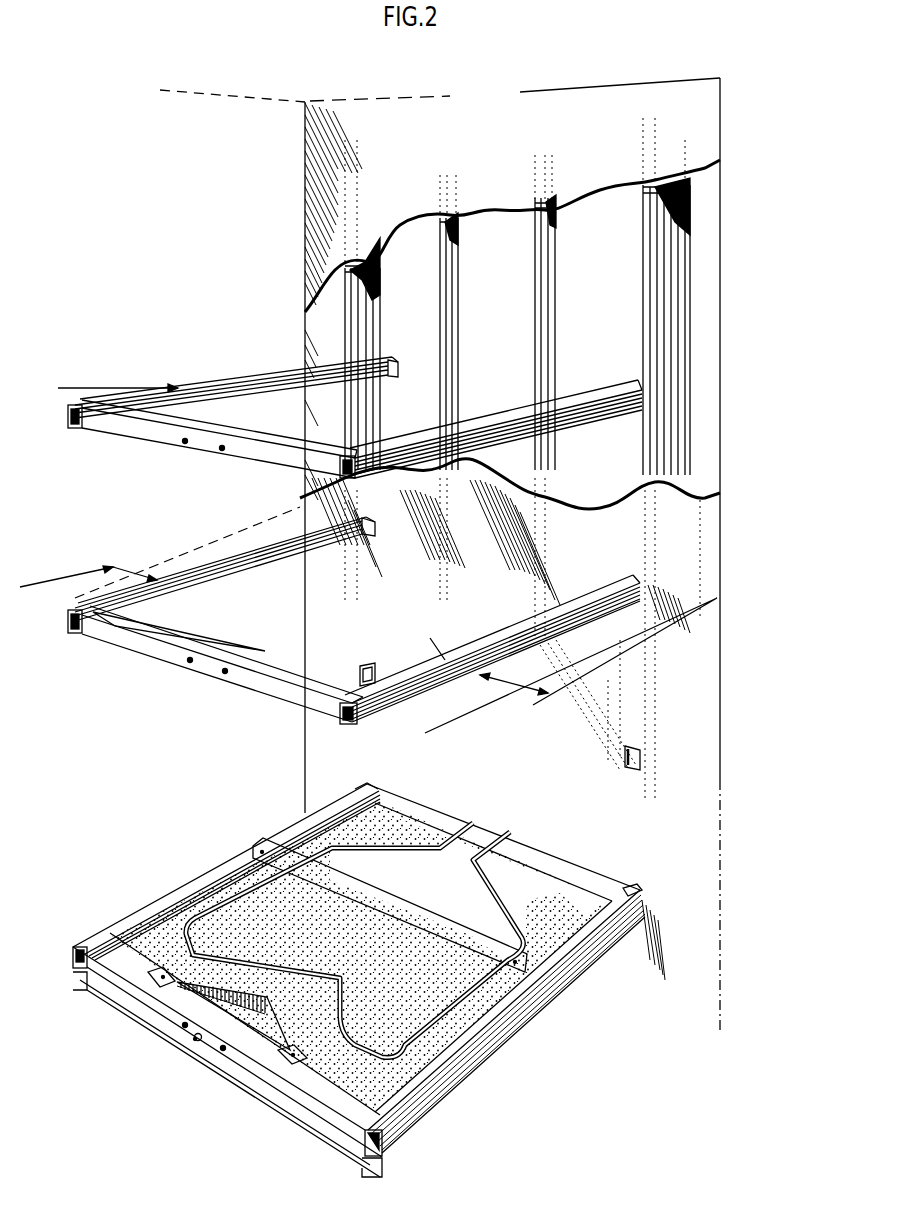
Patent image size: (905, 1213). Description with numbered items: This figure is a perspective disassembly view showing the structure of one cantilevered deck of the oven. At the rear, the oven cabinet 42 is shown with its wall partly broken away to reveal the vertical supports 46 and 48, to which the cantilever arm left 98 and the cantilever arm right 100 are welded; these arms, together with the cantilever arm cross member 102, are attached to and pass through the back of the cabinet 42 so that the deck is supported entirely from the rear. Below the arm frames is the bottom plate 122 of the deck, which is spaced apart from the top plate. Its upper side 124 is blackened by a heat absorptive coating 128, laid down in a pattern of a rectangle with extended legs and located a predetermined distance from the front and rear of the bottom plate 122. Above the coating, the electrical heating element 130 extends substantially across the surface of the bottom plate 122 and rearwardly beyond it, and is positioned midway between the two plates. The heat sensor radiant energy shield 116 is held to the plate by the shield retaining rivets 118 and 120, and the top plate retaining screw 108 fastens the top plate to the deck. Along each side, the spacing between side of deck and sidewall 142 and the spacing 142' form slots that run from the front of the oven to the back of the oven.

The oven cabinet 42 is at (615, 128).
The vertical support 46 is at (688, 232).
The vertical support 48 is at (365, 345).
The cantilever arm right 100 is at (522, 431).
The spacing between side of deck and sidewall 142 is at (160, 563).
The cantilever arm left 98 is at (262, 650).
The cantilever arm cross member 102 is at (240, 680).
The spacing between side of deck and sidewall 142' is at (599, 684).
The upper side of bottom plate 124 is at (398, 878).
The heat absorptive coating 128 is at (300, 893).
The heating element 130 is at (490, 877).
The shield retaining rivet 118 is at (158, 978).
The heat sensor radiant energy shield 116 is at (217, 993).
The top plate retaining screw 108 is at (262, 1000).
The shield retaining rivet 120 is at (290, 1053).
The bottom plate 122 is at (315, 1130).